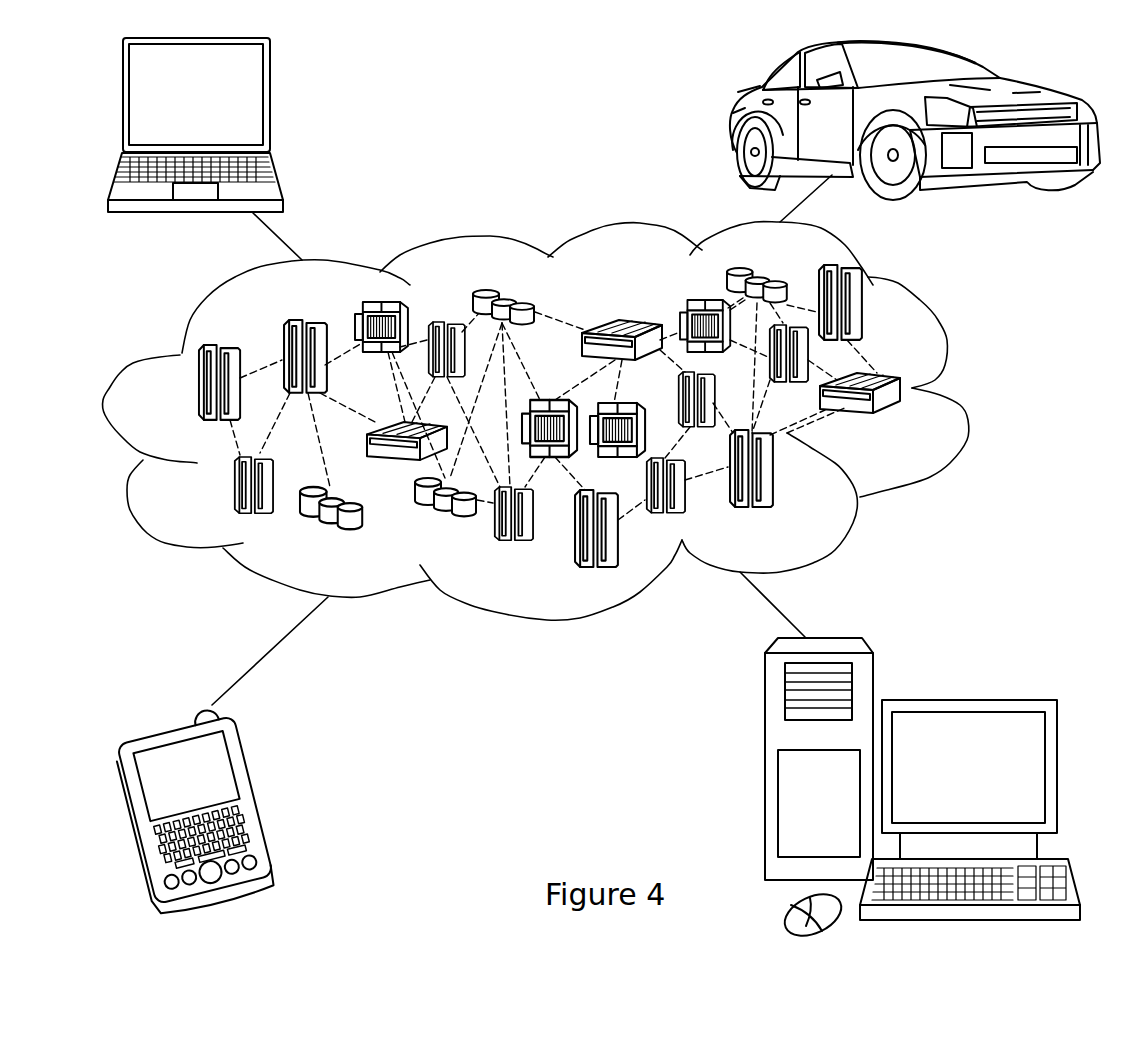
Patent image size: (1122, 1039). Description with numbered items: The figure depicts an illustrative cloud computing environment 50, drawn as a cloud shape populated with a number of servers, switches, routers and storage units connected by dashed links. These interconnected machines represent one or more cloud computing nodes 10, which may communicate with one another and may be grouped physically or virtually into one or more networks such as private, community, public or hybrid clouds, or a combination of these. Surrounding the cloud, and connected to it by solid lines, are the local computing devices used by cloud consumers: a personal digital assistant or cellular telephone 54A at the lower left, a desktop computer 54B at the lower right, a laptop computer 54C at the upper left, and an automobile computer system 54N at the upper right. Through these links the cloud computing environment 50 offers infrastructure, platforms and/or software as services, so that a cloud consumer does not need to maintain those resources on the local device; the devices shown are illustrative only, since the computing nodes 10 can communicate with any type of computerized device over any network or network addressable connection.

The cloud computing node 10 is at (907, 427).
The cloud computing environment 50 is at (967, 390).
The personal digital assistant or cellular telephone 54A is at (258, 798).
The desktop computer 54B is at (963, 700).
The laptop computer 54C is at (270, 102).
The automobile computer system 54N is at (735, 120).